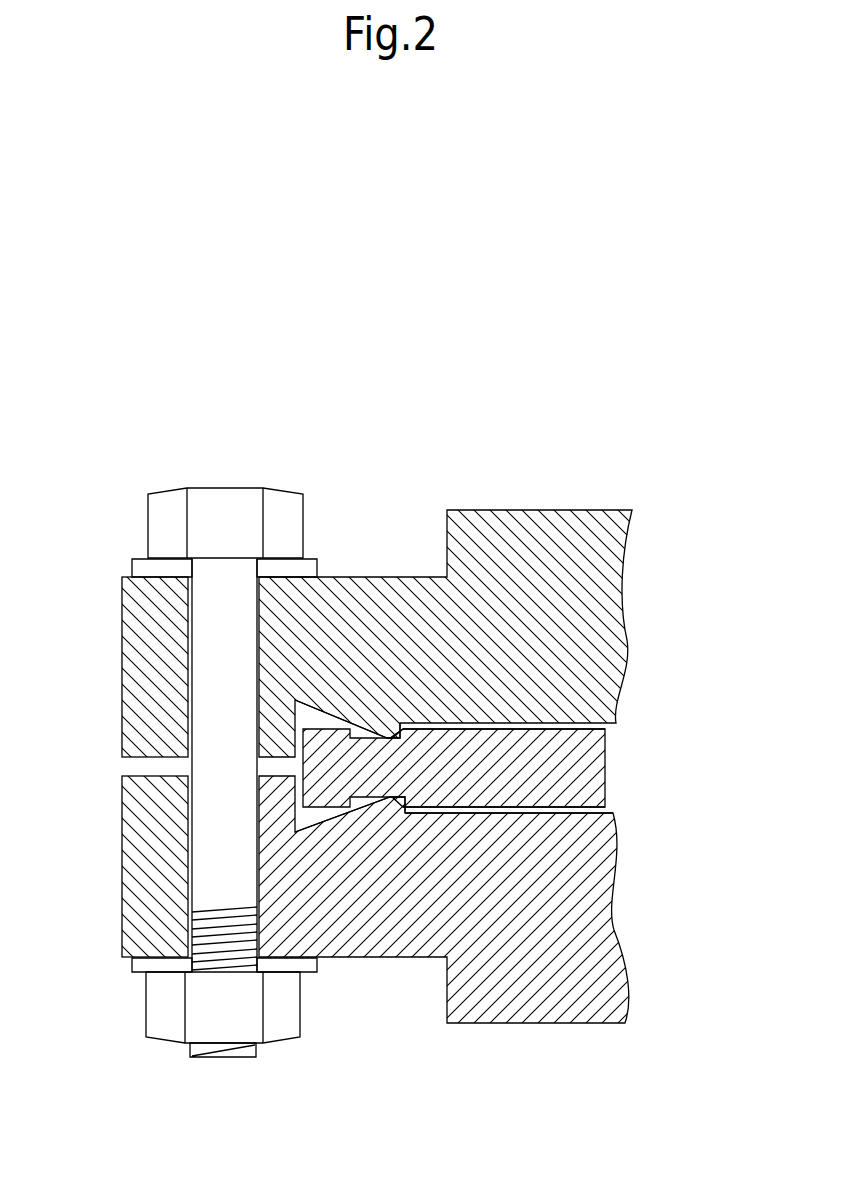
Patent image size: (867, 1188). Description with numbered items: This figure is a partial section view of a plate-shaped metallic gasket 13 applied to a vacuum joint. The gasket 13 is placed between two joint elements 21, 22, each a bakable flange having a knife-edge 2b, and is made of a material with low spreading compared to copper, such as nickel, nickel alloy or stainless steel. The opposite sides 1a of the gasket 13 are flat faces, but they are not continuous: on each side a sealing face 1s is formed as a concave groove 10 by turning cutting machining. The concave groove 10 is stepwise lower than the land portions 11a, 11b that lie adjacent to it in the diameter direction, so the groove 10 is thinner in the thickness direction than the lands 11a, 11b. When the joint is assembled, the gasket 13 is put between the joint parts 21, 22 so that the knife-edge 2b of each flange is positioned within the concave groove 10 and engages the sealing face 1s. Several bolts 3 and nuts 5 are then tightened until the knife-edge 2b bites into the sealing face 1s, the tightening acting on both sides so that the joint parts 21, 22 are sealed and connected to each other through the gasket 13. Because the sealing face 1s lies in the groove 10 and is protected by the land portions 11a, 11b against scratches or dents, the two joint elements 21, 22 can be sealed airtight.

The bolt 3 is at (210, 487).
The nut 5 is at (146, 1007).
The joint element 21 is at (488, 498).
The joint element 22 is at (472, 1040).
The metallic gasket 13 is at (607, 770).
The concave groove 10 is at (387, 737).
The knife-edge 2b is at (390, 736).
The sealing face 1s is at (390, 738).
The opposite side 1a is at (557, 729).
The land portion 11a is at (313, 827).
The land portion 11b is at (452, 813).